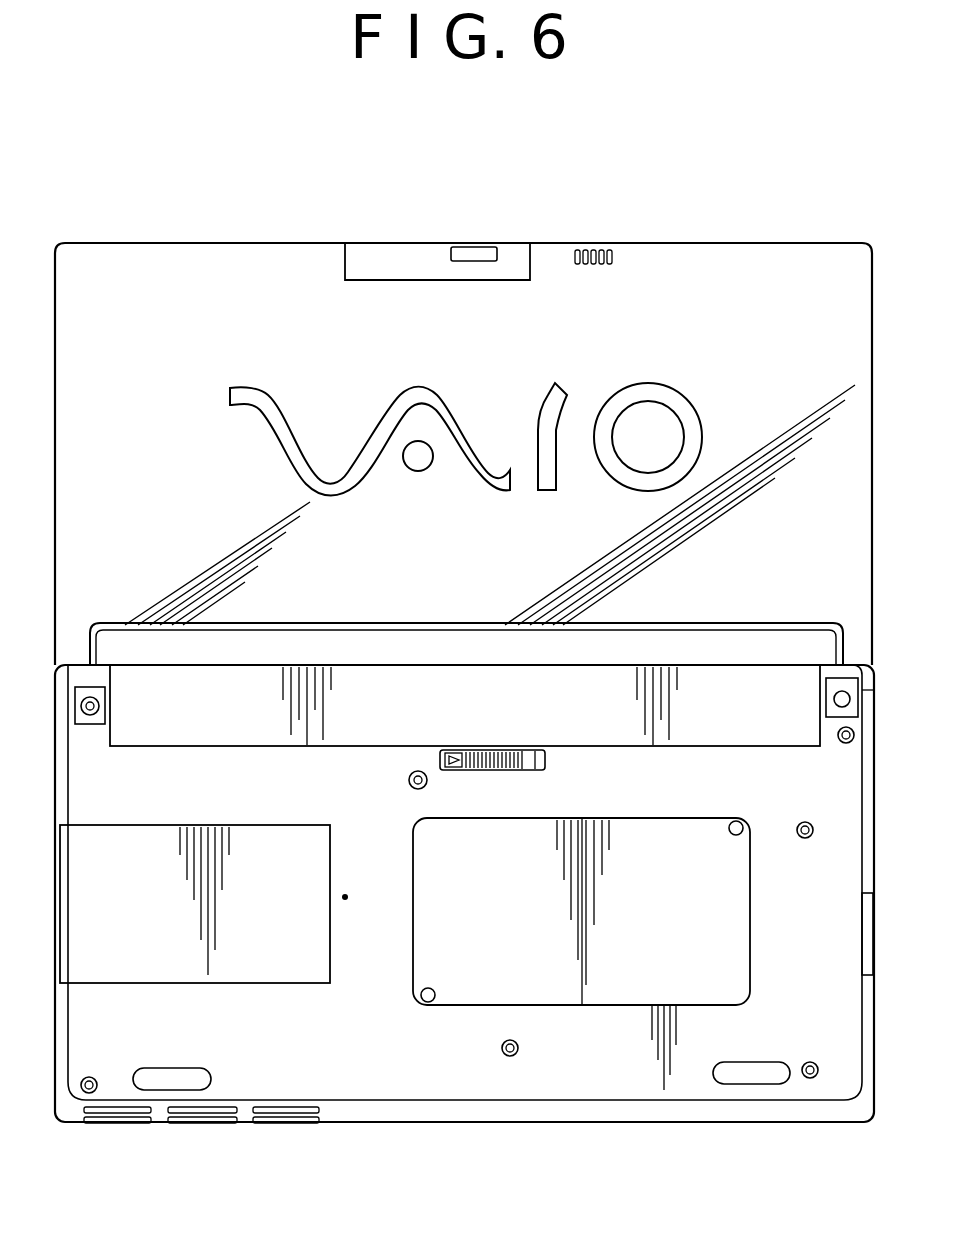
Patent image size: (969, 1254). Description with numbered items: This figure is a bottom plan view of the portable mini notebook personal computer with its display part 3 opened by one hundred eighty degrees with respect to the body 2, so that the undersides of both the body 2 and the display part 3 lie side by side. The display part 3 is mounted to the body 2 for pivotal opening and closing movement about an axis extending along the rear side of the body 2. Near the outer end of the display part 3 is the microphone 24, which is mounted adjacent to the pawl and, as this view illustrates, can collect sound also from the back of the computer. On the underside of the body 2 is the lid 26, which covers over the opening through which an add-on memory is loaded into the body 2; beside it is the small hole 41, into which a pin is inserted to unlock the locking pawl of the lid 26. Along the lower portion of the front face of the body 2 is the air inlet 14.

The body 2 is at (643, 1123).
The display part 3 is at (768, 240).
The air inlet 14 is at (200, 1124).
The microphone 24 is at (588, 247).
The lid 26 is at (245, 985).
The small hole 41 is at (345, 897).